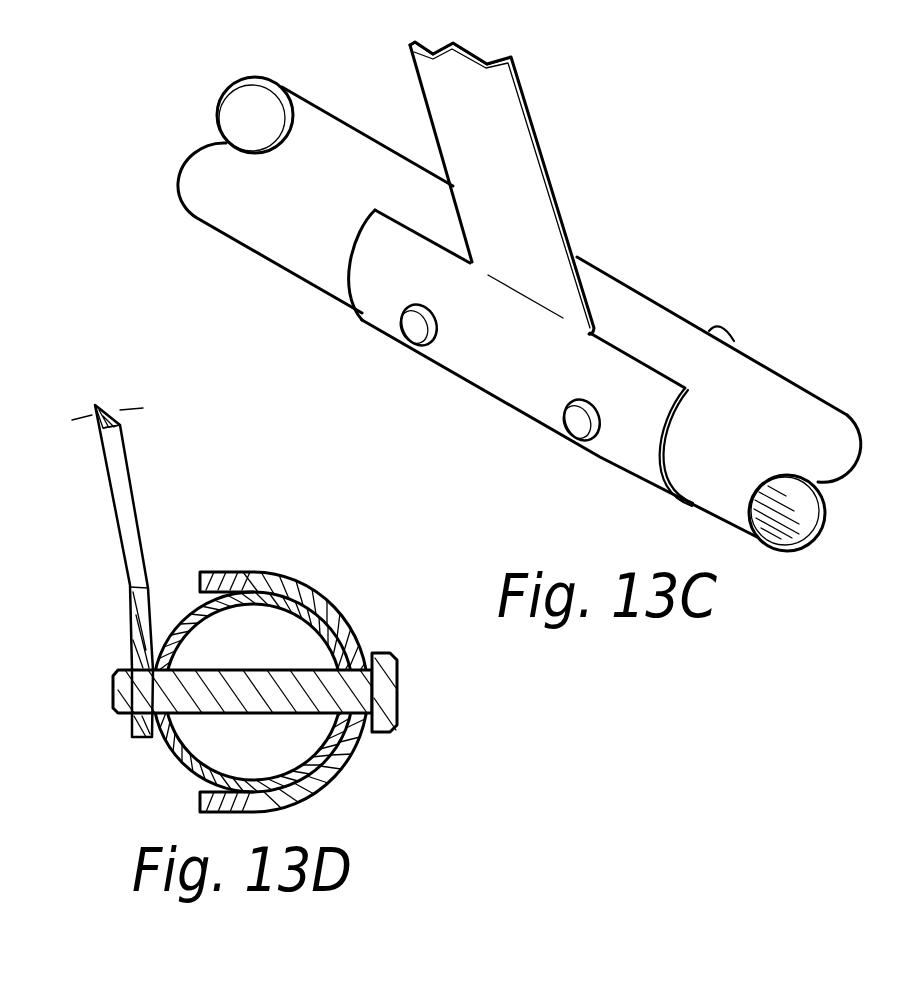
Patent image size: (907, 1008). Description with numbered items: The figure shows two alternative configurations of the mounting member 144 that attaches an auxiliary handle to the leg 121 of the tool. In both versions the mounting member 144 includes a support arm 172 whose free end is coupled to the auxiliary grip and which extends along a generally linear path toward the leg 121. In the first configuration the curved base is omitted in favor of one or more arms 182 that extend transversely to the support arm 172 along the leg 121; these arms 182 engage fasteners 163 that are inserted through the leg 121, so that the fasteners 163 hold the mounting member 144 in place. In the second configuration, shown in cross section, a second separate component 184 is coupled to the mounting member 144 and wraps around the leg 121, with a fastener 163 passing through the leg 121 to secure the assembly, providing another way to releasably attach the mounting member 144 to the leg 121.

In FIG. 13D, the first leg 121 is at (188, 610).
In FIG. 13C, the second mounting member 144 is at (562, 200).
In FIG. 13D, the second mounting member 144 is at (137, 514).
In FIG. 13C, the fastener 163 is at (410, 328).
In FIG. 13D, the fastener 163 is at (398, 684).
In FIG. 13C, the support arm 172 is at (528, 88).
In FIG. 13D, the support arm 172 is at (123, 445).
In FIG. 13C, the arm 182 is at (645, 363).
In FIG. 13D, the second separate component 184 is at (347, 613).